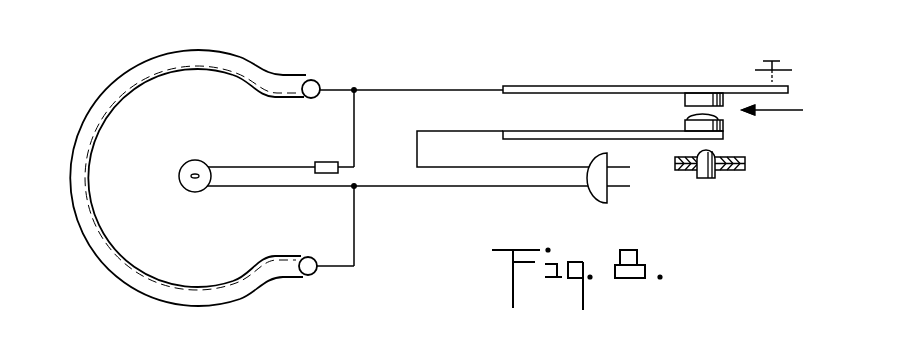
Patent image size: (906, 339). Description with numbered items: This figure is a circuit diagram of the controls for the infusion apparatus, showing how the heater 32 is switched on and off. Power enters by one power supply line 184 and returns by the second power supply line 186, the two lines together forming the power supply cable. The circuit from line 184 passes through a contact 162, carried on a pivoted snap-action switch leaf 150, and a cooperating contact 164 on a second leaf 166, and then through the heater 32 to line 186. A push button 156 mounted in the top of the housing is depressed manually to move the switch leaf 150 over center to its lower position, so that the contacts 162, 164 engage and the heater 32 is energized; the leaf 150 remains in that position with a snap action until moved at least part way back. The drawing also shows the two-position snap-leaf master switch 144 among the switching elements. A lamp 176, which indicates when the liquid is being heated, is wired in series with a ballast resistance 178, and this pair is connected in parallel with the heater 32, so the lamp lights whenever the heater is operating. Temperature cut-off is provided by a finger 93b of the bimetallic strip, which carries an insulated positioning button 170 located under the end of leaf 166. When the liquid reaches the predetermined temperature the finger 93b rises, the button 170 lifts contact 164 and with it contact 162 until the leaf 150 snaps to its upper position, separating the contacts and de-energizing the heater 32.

The heater 32 is at (222, 62).
The lamp 176 is at (188, 193).
The ballast resistance 178 is at (330, 161).
The switch leaf 150 is at (567, 85).
The leaf 166 is at (558, 131).
The power supply line 184 is at (442, 166).
The second power supply line 186 is at (442, 188).
The contact 162 is at (700, 98).
The contact 164 is at (724, 127).
The push button 156 is at (786, 70).
The master switch 144 is at (793, 117).
The finger 93b is at (738, 168).
The positioning button 170 is at (712, 178).